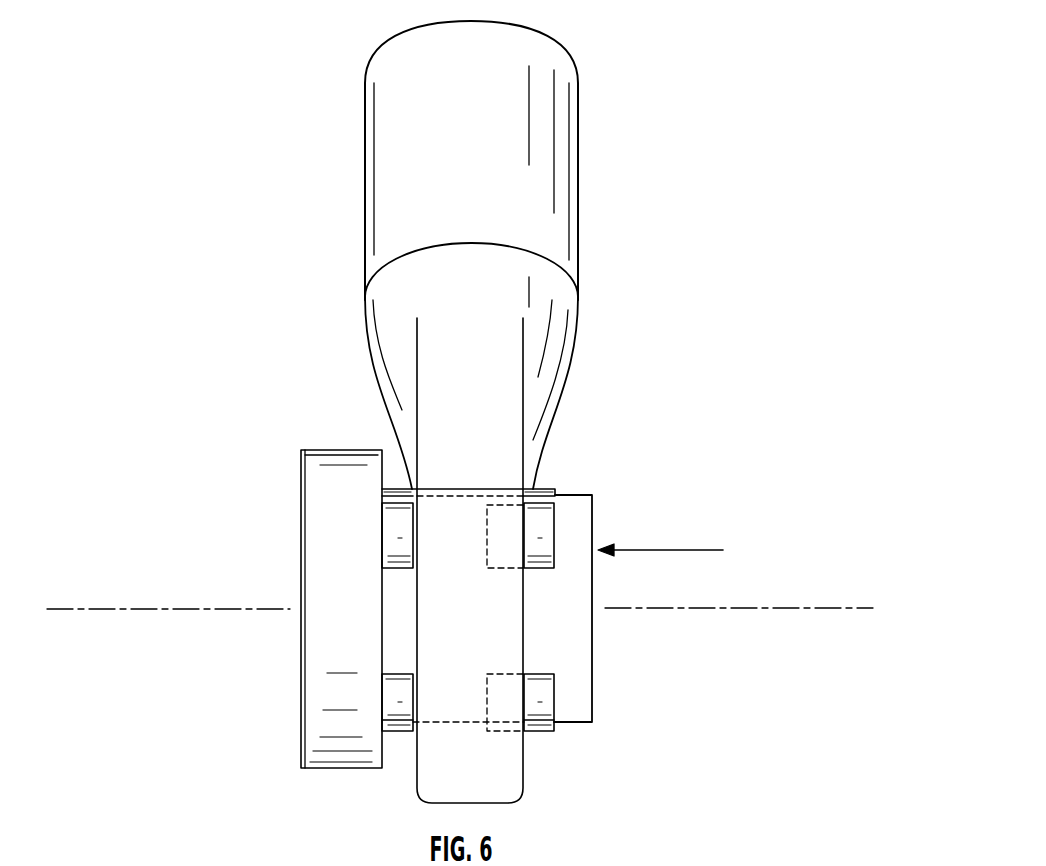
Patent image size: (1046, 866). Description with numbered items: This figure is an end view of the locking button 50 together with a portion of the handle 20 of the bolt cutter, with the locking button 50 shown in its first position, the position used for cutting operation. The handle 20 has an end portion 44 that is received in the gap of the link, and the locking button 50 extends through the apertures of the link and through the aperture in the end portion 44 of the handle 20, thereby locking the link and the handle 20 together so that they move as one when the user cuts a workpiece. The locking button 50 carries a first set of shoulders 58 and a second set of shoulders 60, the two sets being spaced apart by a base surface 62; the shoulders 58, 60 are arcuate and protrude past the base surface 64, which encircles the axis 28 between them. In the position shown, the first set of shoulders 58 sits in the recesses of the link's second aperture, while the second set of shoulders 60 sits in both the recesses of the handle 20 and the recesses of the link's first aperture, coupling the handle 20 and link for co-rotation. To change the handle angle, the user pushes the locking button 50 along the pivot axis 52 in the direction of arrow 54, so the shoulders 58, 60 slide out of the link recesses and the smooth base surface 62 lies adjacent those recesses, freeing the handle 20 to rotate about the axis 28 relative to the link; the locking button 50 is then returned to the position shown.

The handle 20 is at (408, 185).
The axis 28 is at (172, 609).
The end portion 44 is at (485, 473).
The locking button 50 is at (342, 475).
The pivot axis 52 is at (697, 609).
The arrow 54 is at (668, 548).
The first set of shoulders 58 is at (397, 547).
The second set of shoulders 60 is at (538, 723).
The base surface 62 is at (462, 563).
The base surface 64 is at (577, 584).